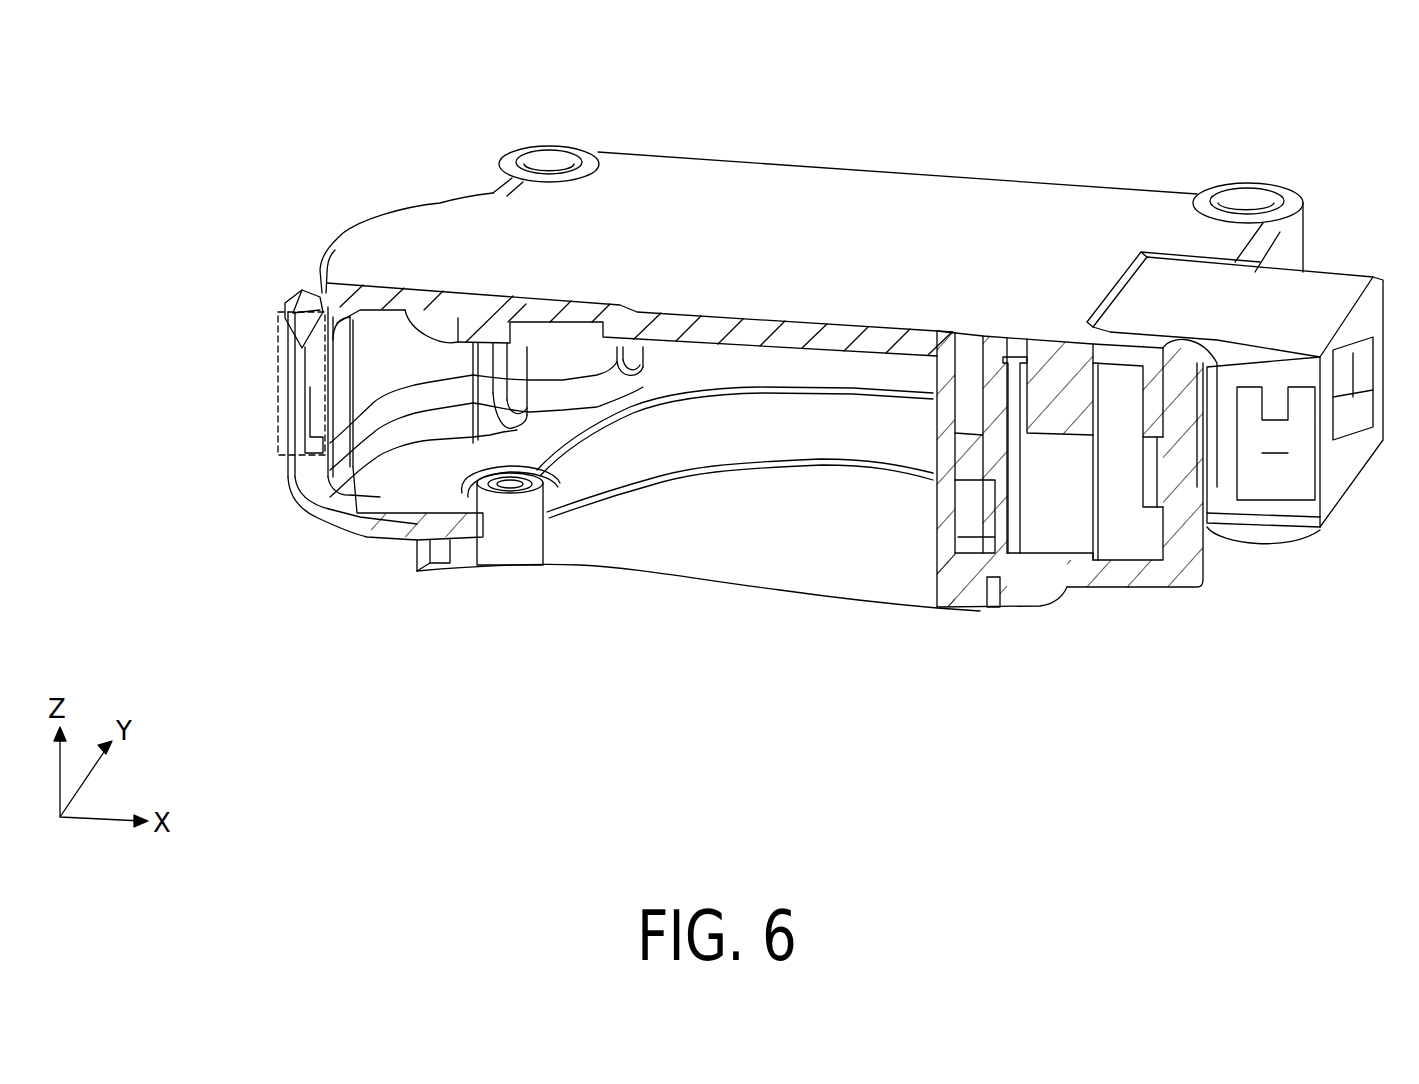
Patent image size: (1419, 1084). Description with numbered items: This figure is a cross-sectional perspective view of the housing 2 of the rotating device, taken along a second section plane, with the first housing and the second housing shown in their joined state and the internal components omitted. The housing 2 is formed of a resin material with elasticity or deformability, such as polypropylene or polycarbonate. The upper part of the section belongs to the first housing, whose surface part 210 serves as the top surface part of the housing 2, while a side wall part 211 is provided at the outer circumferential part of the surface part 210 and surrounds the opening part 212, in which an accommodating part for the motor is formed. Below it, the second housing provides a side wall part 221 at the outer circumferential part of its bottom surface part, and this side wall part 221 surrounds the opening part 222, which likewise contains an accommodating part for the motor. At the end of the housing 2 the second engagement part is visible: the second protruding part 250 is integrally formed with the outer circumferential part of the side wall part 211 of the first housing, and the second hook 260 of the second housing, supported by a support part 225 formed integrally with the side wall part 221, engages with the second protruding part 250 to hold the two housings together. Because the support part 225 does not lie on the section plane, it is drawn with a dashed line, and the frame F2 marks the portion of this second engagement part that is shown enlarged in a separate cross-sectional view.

The housing 2 is at (1190, 101).
The surface part 210 is at (820, 197).
The side wall part 211 is at (1300, 262).
The opening part 212 is at (588, 365).
The side wall part 221 is at (1207, 563).
The opening part 222 is at (634, 551).
The support part 225 is at (300, 400).
The second protruding part 250 is at (302, 358).
The second hook 260 is at (302, 291).
The frame F2 is at (278, 386).